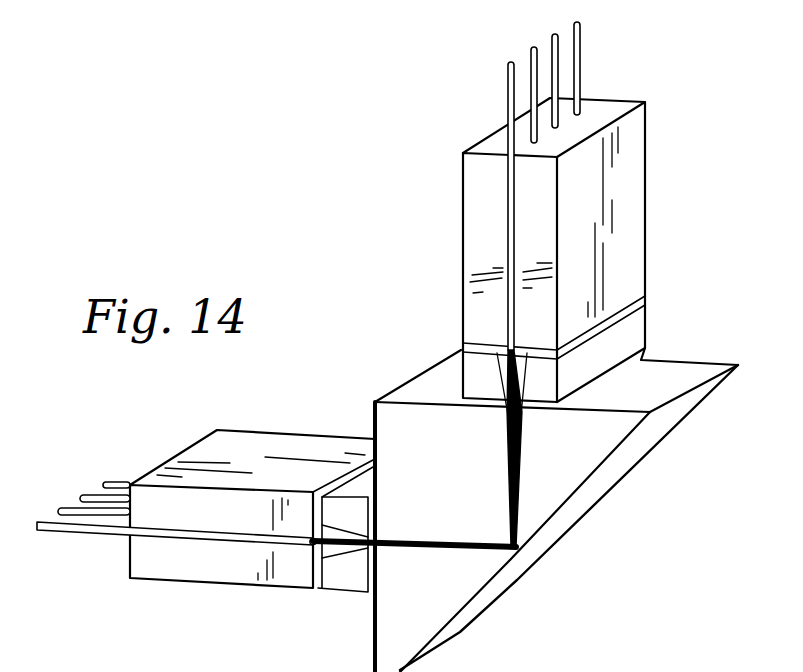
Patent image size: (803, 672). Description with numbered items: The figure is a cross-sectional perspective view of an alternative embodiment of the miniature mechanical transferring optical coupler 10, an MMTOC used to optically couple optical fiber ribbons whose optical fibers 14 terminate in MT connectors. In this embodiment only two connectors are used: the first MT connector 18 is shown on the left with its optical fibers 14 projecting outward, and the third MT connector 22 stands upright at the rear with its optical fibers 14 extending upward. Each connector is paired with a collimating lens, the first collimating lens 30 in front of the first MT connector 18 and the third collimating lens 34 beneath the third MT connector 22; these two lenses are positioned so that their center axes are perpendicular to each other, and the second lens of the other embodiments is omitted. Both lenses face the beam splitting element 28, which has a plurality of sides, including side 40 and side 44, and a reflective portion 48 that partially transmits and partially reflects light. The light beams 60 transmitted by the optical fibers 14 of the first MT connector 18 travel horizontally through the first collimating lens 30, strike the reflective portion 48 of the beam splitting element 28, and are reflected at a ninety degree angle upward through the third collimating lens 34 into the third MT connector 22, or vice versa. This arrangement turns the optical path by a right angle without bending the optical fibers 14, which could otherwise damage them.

The miniature mechanical transferring optical coupler 10 is at (355, 310).
The optical fibers 14 is at (578, 53).
The first MT connector 18 is at (182, 565).
The third MT connector 22 is at (631, 168).
The beam splitting element 28 is at (537, 510).
The first collimating lens 30 is at (357, 580).
The third collimating lens 34 is at (633, 335).
The side of beam splitting element 40 is at (373, 428).
The side of beam splitting element 44 is at (688, 375).
The reflective portion 48 is at (492, 589).
The light beams 60 is at (513, 497).